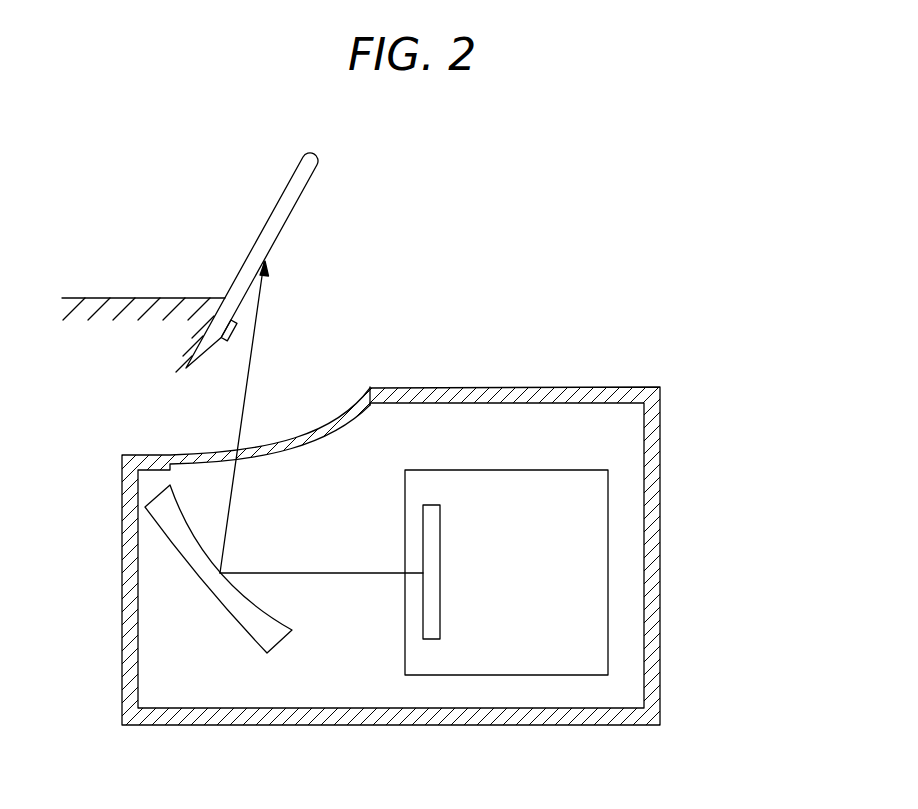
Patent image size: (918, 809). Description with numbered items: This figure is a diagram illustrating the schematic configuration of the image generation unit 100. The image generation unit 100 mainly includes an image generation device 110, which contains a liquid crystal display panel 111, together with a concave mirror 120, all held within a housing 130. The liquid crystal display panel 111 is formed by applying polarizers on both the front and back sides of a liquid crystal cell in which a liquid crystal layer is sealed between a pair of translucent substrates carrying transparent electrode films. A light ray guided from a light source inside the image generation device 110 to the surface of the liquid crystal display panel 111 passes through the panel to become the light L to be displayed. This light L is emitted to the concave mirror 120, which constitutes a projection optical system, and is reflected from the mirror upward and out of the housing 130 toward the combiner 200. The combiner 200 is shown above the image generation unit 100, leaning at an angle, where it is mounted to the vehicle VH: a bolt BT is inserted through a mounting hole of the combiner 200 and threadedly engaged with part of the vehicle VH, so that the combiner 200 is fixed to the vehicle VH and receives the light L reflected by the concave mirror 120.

The image generation unit 100 is at (459, 404).
The image generation device 110 is at (405, 655).
The liquid crystal display panel 111 is at (423, 605).
The concave mirror 120 is at (226, 604).
The housing 130 is at (660, 387).
The combiner 200 is at (293, 176).
The bolt BT is at (228, 339).
The vehicle VH is at (84, 297).
The light to be displayed L is at (322, 572).